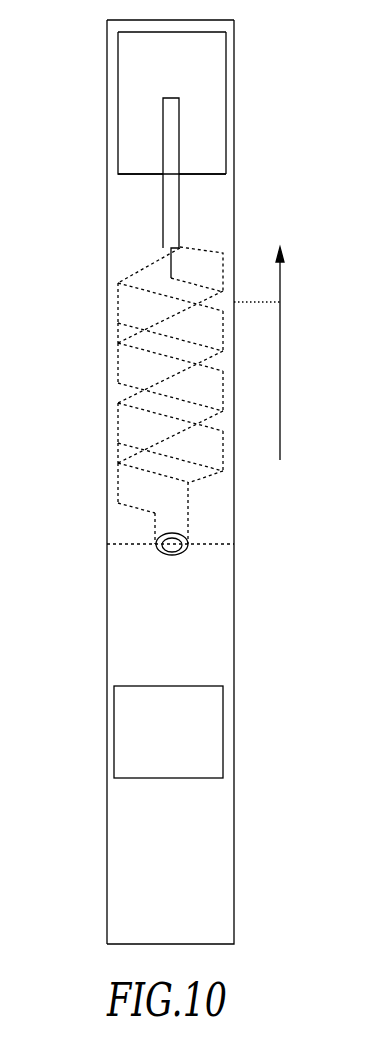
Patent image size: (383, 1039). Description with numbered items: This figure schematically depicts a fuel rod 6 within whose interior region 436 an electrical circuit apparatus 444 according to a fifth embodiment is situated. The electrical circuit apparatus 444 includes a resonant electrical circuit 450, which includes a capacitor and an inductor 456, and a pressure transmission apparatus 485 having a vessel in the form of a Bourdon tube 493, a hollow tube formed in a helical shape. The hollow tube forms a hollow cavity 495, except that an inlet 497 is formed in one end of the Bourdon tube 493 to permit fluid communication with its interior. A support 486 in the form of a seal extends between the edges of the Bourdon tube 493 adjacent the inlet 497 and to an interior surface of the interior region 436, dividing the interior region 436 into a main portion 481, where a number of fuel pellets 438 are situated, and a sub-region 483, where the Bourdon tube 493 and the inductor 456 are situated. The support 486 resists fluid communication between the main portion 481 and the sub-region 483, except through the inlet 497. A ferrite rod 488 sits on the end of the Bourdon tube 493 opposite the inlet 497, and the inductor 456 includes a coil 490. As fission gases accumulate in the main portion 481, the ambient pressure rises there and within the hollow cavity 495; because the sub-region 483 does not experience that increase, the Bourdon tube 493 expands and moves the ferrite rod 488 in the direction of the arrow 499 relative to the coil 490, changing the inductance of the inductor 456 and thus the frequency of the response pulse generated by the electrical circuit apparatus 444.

The fuel rod 6 is at (92, 805).
The interior region 436 is at (218, 812).
The fuel pellets 438 is at (176, 686).
The electrical circuit apparatus 444 is at (240, 112).
The resonant electrical circuit 450 is at (240, 68).
The inductor 456 is at (227, 38).
The main portion 481 is at (218, 603).
The sub-region 483 is at (219, 507).
The pressure transmission apparatus 485 is at (102, 409).
The support 486 is at (240, 562).
The ferrite rod 488 is at (163, 223).
The coil 490 is at (227, 160).
The Bourdon tube 493 is at (102, 354).
The hollow cavity 495 is at (128, 492).
The inlet 497 is at (172, 558).
The arrow 499 is at (281, 327).